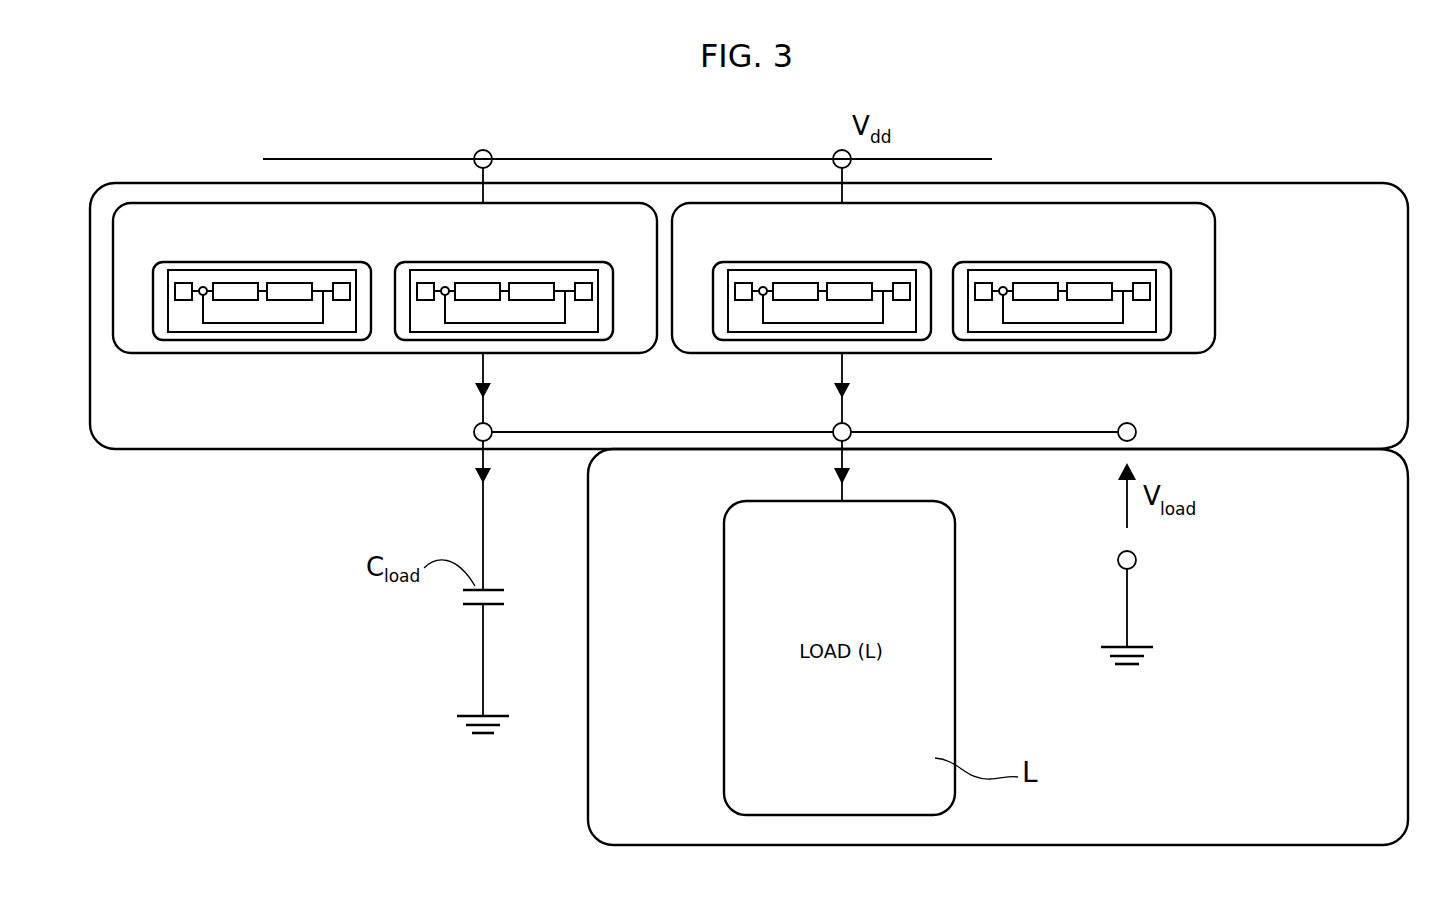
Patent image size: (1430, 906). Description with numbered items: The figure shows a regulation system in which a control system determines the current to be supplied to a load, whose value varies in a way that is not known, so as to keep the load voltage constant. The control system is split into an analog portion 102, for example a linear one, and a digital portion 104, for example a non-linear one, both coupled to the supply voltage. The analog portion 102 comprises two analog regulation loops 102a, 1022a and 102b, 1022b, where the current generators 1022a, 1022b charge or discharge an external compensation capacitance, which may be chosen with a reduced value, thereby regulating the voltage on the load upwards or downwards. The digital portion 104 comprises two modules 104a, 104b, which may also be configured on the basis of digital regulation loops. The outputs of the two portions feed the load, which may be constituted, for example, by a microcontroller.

The analog portion 102 is at (216, 364).
The analog regulation loop 102a is at (256, 278).
The current generator 1022a is at (289, 281).
The analog regulation loop 102b is at (445, 333).
The current generator 1022b is at (470, 313).
The digital portion 104 is at (1188, 371).
The module 104a is at (787, 313).
The module 104b is at (1057, 313).